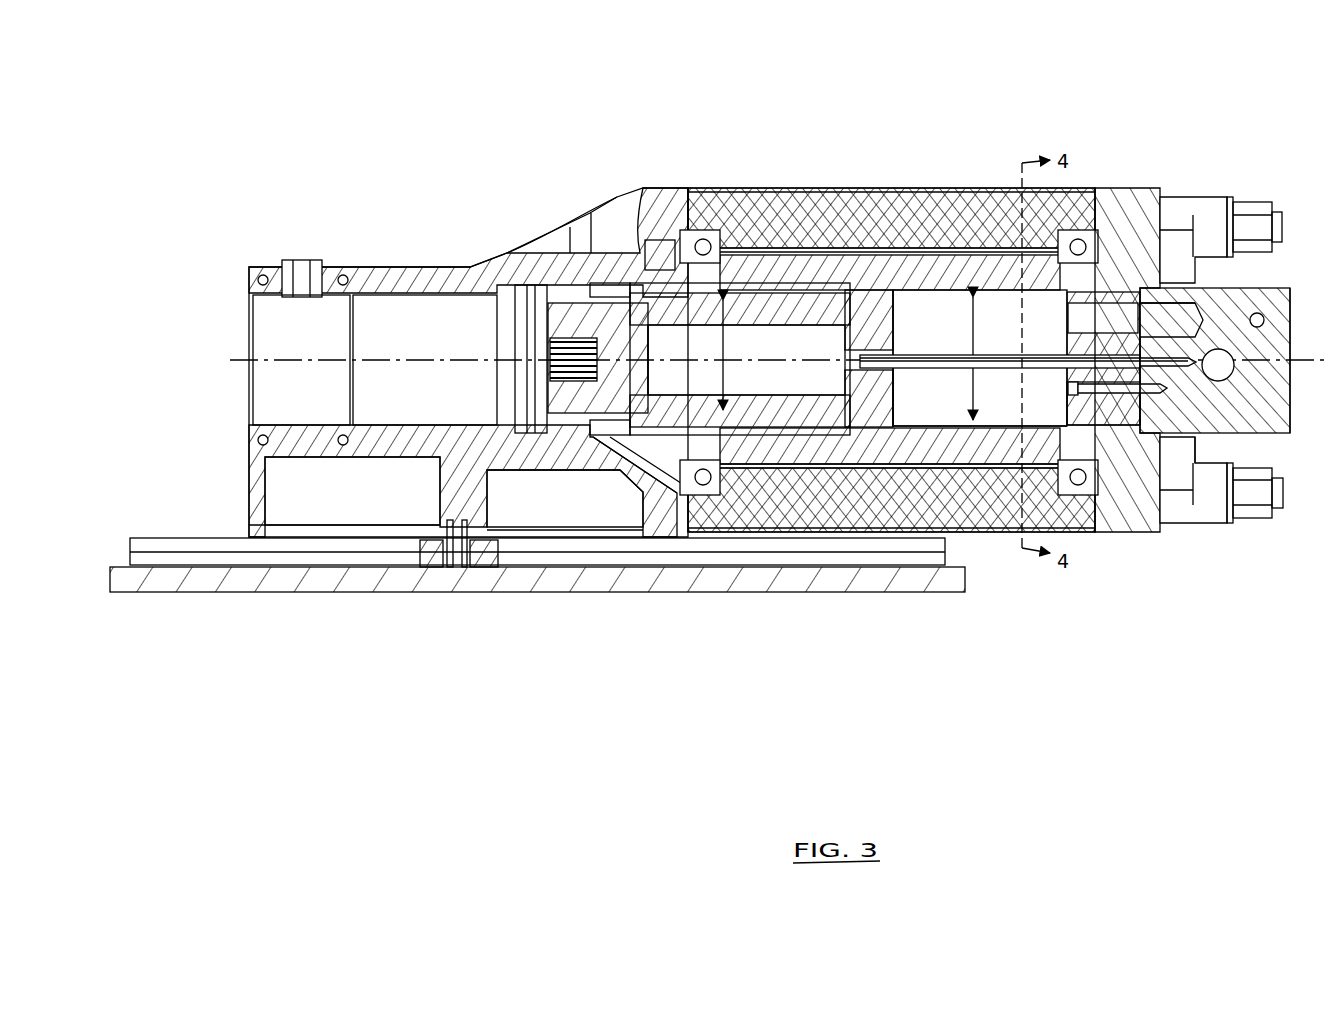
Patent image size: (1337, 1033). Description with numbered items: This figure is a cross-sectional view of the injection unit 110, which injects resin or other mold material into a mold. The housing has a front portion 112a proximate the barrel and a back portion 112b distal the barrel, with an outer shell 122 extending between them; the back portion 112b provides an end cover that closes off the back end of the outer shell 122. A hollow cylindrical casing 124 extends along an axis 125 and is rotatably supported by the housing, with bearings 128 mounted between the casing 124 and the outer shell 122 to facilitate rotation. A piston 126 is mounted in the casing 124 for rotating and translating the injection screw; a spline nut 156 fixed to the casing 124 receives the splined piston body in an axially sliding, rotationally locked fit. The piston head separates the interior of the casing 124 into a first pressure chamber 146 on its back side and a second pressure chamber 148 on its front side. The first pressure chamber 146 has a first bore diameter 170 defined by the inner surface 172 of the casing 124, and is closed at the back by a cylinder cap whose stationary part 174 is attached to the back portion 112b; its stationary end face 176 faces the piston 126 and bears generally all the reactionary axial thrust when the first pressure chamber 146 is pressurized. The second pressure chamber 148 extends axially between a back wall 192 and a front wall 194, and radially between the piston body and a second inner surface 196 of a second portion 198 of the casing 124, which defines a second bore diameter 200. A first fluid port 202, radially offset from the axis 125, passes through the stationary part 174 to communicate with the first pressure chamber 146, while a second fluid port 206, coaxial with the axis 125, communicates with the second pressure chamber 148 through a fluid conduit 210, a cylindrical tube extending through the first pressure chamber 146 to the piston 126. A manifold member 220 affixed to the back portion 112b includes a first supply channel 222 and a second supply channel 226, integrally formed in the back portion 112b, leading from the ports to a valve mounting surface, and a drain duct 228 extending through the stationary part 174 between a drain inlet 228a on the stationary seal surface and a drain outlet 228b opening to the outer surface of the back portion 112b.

The injection unit 110 is at (990, 86).
The front portion of housing 112a is at (390, 273).
The back portion of housing 112b is at (1145, 207).
The outer shell 122 is at (907, 187).
The hollow cylindrical casing 124 is at (923, 433).
The axis 125 is at (267, 362).
The piston 126 is at (903, 333).
The bearings 128 is at (705, 235).
The first pressure chamber 146 is at (1013, 336).
The second pressure chamber 148 is at (777, 300).
The spline nut 156 is at (823, 293).
The first bore diameter 170 is at (970, 346).
The inner surface of cylindrical casing 172 is at (940, 295).
The stationary part of cylinder cap 174 is at (1058, 314).
The stationary end face 176 is at (1064, 404).
The back wall 192 is at (830, 418).
The front wall 194 is at (652, 417).
The second inner surface 196 is at (672, 300).
The second portion of casing 198 is at (670, 240).
The second bore diameter 200 is at (723, 353).
The first fluid port 202 is at (1113, 325).
The second fluid port 206 is at (1093, 352).
The fluid conduit 210 is at (908, 366).
The manifold member 220 is at (1305, 437).
The first supply channel 222 is at (1183, 318).
The second supply channel 226 is at (1227, 432).
The drain duct 228 is at (1145, 420).
The drain inlet 228a is at (1066, 409).
The drain outlet 228b is at (1237, 525).